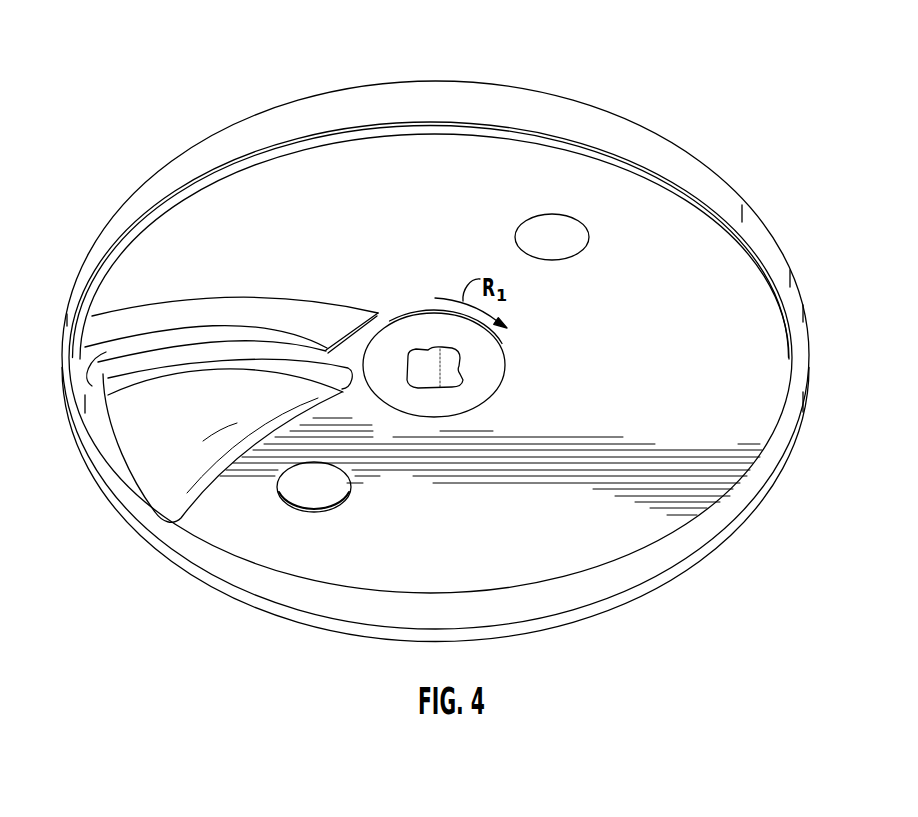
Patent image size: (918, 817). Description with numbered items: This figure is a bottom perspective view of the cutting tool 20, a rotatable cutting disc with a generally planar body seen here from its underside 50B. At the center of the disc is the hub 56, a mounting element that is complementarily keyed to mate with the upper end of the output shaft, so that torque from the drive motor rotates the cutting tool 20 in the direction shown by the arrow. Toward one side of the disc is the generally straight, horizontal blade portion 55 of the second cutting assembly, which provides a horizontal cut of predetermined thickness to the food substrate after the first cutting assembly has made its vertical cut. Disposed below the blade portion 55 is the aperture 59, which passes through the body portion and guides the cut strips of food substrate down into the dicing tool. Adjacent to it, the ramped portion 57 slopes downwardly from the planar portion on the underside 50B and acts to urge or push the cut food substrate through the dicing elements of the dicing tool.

The cutting tool 20 is at (496, 59).
The underside 50B is at (613, 336).
The hub 56 is at (487, 377).
The aperture 59 is at (153, 317).
The blade portion 55 is at (100, 362).
The ramped portion 57 is at (146, 452).